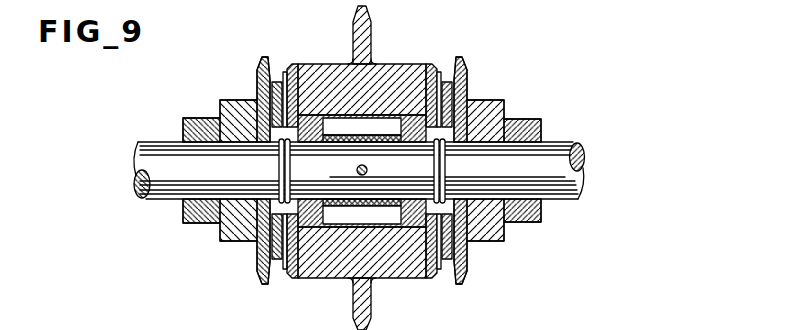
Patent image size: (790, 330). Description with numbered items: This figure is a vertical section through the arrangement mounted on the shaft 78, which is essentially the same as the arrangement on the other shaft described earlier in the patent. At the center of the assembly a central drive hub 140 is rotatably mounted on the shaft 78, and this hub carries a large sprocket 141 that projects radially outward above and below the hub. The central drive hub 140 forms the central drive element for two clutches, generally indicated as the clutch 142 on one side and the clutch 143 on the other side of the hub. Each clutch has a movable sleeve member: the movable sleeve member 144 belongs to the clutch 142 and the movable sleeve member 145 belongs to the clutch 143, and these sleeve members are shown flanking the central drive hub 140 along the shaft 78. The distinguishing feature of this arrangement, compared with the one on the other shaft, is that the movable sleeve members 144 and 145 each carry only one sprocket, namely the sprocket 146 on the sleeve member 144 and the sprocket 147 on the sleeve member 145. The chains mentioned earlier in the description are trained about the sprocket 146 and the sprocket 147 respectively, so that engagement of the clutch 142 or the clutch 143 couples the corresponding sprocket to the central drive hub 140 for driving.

The shaft 78 is at (585, 149).
The central drive hub 140 is at (406, 70).
The large sprocket 141 is at (364, 31).
The clutch 142 is at (444, 68).
The clutch 143 is at (286, 68).
The movable sleeve member 144 is at (487, 110).
The movable sleeve member 145 is at (220, 110).
The sprocket 146 is at (469, 78).
The sprocket 147 is at (266, 76).